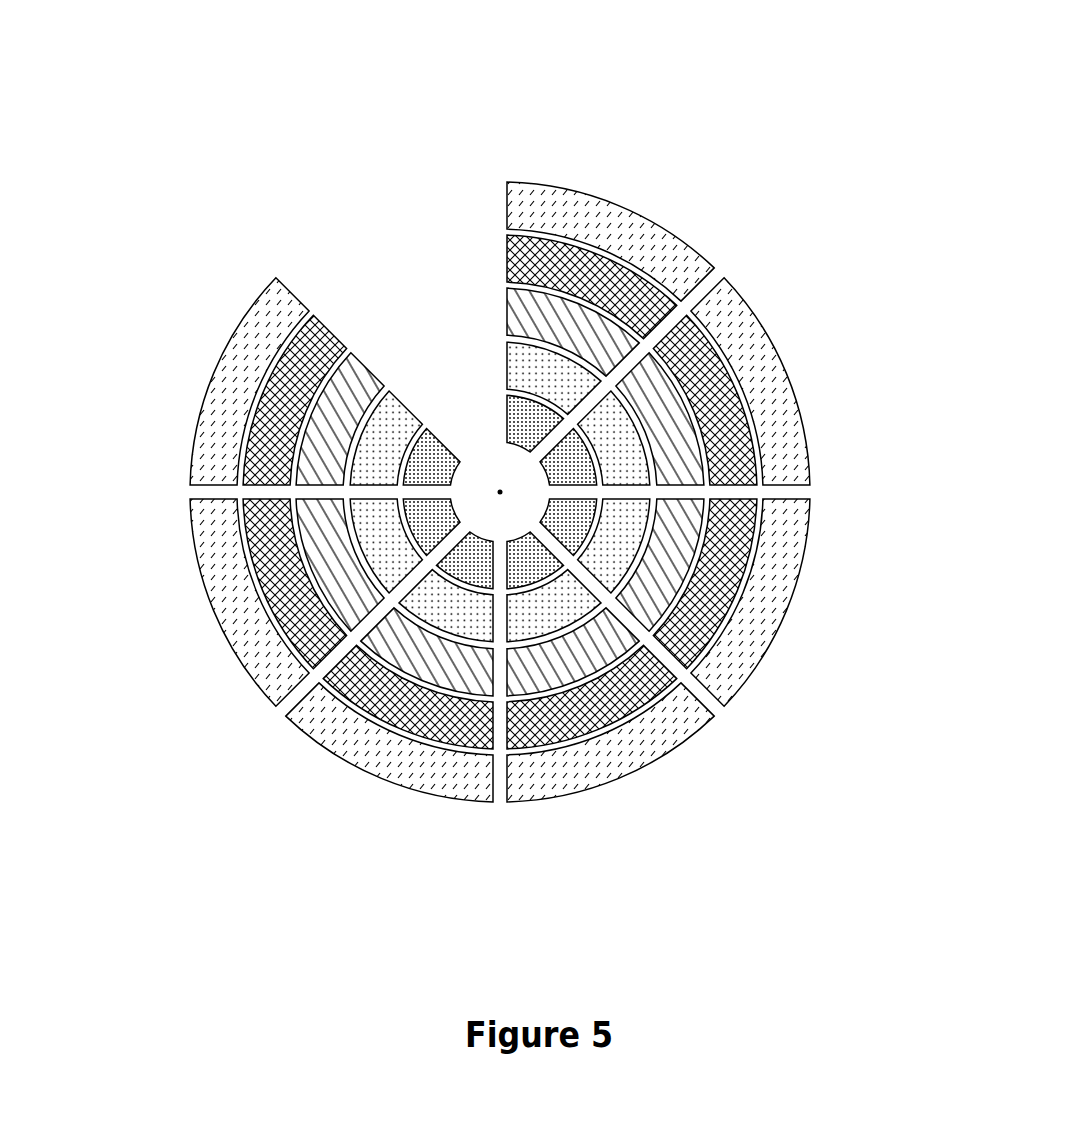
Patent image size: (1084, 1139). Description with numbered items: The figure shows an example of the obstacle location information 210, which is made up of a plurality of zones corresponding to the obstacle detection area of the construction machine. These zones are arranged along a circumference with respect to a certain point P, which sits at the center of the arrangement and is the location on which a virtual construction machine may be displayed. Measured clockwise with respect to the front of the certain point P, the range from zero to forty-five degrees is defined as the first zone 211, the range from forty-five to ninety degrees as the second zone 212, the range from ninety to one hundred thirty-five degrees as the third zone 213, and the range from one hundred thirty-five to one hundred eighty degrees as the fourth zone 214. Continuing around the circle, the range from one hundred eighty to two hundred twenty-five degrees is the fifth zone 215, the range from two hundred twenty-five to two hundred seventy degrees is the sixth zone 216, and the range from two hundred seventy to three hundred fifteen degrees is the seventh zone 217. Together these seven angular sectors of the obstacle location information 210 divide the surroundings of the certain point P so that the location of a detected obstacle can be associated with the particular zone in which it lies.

The obstacle location information 210 is at (290, 93).
The first zone 211 is at (597, 195).
The second zone 212 is at (782, 350).
The third zone 213 is at (797, 587).
The fourth zone 214 is at (642, 768).
The fifth zone 215 is at (403, 788).
The sixth zone 216 is at (222, 632).
The seventh zone 217 is at (203, 400).
The certain point P is at (500, 492).